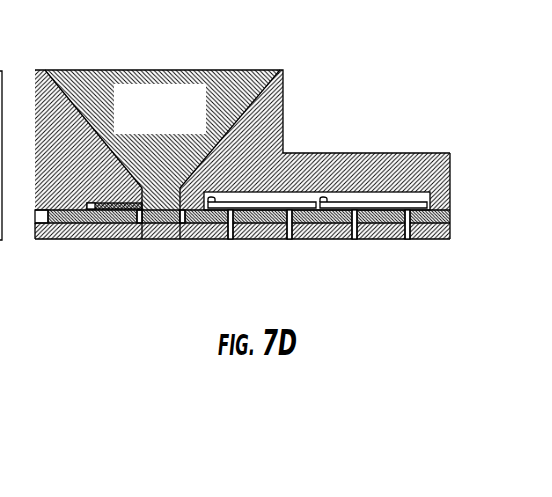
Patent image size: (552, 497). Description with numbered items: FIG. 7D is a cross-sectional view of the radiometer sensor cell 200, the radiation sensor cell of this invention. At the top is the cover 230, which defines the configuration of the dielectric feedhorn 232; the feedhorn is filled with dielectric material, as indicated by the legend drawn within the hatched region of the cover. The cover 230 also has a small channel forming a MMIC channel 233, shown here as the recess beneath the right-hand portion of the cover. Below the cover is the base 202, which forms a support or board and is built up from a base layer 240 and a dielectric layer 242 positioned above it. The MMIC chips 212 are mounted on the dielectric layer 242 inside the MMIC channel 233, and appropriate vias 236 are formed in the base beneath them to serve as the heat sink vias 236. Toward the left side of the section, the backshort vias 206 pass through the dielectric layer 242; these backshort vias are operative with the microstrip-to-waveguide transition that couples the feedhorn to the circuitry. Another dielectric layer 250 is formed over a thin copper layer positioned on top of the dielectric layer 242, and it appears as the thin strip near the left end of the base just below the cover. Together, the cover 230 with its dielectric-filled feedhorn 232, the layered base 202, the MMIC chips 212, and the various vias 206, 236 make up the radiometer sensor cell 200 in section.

The radiometer sensor cell 200 is at (276, 178).
The base 202 is at (457, 222).
The backshort vias 206 is at (143, 240).
The MMIC chips 212 is at (353, 222).
The cover 230 is at (377, 165).
The dielectric feedhorn 232 is at (240, 105).
The MMIC channel 233 is at (390, 195).
The heat sink vias 236 is at (407, 240).
The base layer 240 is at (218, 237).
The dielectric layer 242 is at (117, 217).
The dielectric layer 250 is at (102, 205).